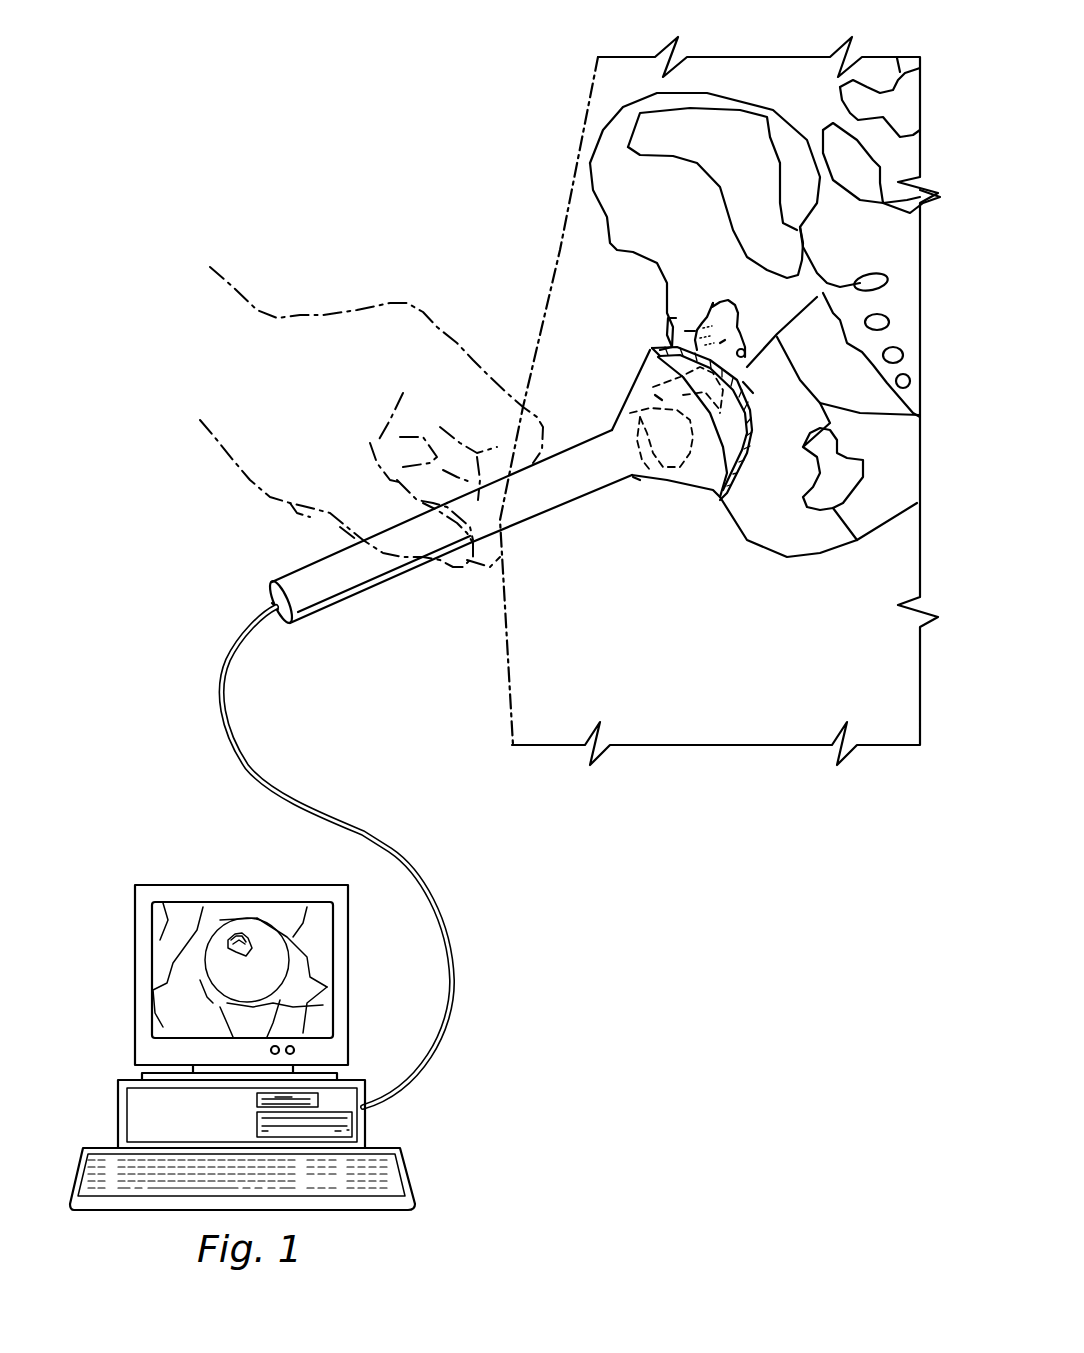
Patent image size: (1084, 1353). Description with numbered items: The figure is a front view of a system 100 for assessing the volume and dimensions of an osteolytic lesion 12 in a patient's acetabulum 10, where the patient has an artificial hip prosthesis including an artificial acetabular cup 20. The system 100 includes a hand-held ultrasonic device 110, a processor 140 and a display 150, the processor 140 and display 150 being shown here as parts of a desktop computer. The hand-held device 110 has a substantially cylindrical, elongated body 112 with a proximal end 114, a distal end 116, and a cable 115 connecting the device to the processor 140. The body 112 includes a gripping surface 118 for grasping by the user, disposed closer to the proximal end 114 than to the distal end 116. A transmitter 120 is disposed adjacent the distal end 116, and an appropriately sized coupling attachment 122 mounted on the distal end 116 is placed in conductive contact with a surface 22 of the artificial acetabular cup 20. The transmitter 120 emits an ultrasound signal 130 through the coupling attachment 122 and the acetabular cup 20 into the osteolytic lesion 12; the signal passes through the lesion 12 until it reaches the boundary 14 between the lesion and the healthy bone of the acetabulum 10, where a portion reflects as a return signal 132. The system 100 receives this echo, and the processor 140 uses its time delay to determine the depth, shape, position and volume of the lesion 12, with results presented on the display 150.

The acetabulum 10 is at (677, 221).
The osteolytic lesion 12 is at (728, 290).
The boundary 14 is at (723, 297).
The artificial acetabular cup 20 is at (752, 395).
The surface 22 is at (752, 452).
The system 100 is at (398, 192).
The hand-held ultrasonic device 110 is at (501, 466).
The body 112 is at (415, 537).
The proximal end 114 is at (267, 592).
The cable 115 is at (213, 707).
The distal end 116 is at (625, 410).
The gripping surface 118 is at (370, 593).
The transmitter 120 is at (686, 478).
The coupling attachment 122 is at (655, 482).
The ultrasound signal 130 is at (720, 343).
The return signal 132 is at (652, 398).
The processor 140 is at (117, 1113).
The display 150 is at (187, 883).